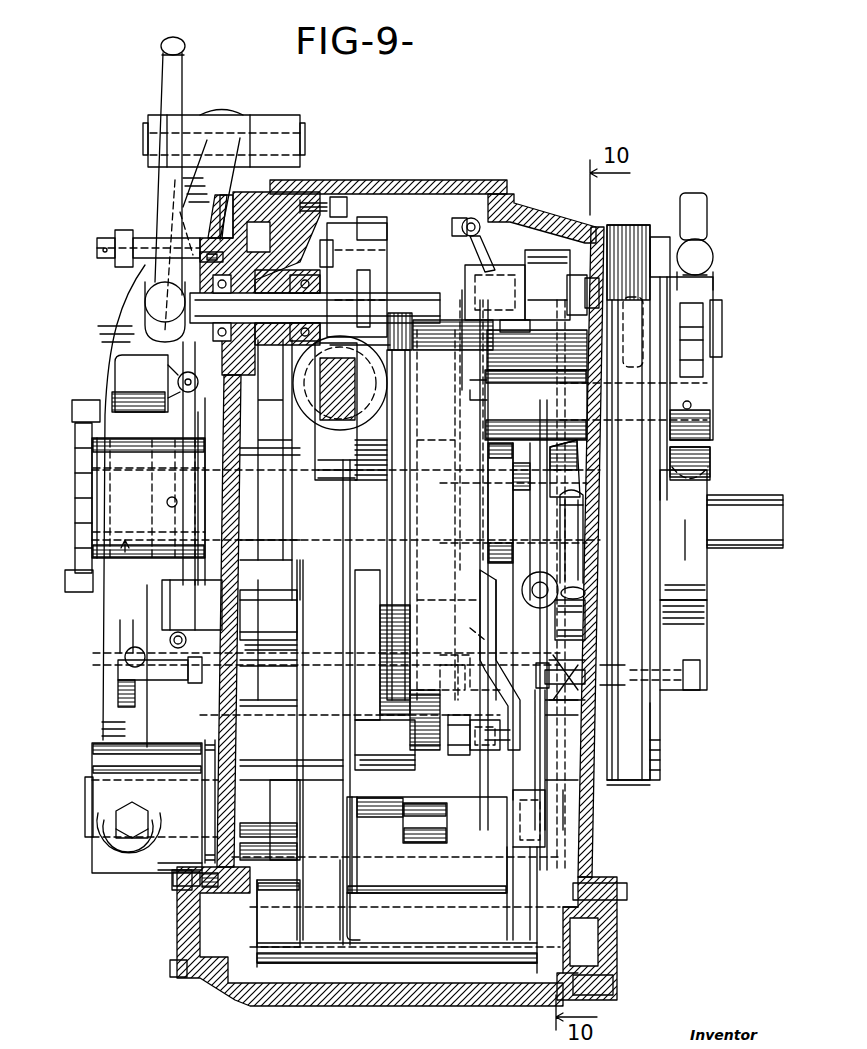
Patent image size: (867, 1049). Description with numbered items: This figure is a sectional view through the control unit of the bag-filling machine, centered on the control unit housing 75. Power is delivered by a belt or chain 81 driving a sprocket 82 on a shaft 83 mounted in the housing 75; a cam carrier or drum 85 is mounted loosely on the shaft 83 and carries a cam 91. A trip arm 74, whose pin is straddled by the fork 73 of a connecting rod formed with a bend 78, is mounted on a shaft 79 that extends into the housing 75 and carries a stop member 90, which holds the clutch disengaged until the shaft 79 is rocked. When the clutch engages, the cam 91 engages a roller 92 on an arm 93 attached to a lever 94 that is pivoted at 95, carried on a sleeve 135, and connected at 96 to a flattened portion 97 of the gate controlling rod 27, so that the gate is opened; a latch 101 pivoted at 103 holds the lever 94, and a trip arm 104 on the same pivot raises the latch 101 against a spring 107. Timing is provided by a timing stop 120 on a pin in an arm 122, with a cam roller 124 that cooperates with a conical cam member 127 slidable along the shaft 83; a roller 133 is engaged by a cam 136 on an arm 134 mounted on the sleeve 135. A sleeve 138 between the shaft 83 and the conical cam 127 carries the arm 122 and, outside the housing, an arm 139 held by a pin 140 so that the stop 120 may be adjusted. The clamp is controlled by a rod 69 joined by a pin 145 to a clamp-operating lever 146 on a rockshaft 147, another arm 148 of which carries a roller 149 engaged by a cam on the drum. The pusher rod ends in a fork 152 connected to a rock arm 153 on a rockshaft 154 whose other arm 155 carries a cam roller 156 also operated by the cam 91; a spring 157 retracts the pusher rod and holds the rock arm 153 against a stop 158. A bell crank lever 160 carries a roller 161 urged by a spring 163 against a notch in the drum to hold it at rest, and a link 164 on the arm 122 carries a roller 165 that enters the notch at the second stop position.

The gate controlling rod 27 is at (296, 376).
The rod 69 is at (125, 230).
The fork 73 is at (697, 325).
The trip arm 74 is at (703, 375).
The control unit housing 75 is at (543, 227).
The bend 78 is at (680, 203).
The shaft 79 is at (714, 404).
The belt or chain 81 is at (70, 408).
The sprocket 82 is at (70, 488).
The shaft 83 is at (740, 550).
The cam carrier or drum 85 is at (380, 697).
The stop member 90 is at (490, 400).
The cam 91 is at (418, 727).
The roller 92 is at (447, 824).
The arm 93 is at (410, 782).
The lever 94 is at (308, 673).
The pivot 95 is at (608, 934).
The connection 96 is at (300, 393).
The flattened portion 97 is at (320, 418).
The latch 101 is at (330, 240).
The pivot 103 is at (263, 303).
The trip arm 104 is at (182, 80).
The spring 107 is at (318, 222).
The timing stop 120 is at (470, 628).
The arm 122 is at (515, 705).
The cam roller 124 is at (562, 580).
The conical cam member 127 is at (555, 516).
The roller 133 is at (555, 630).
The arm 134 is at (545, 735).
The sleeve 135 is at (311, 968).
The cam 136 is at (548, 677).
The sleeve 138 is at (545, 470).
The arm 139 is at (680, 620).
The pin 140 is at (695, 670).
The pin 145 is at (103, 262).
The clamp-operating lever 146 is at (180, 430).
The rockshaft 147 is at (280, 628).
The arm 148 is at (350, 558).
The roller 149 is at (460, 555).
The fork 152 is at (300, 128).
The rock arm 153 is at (127, 317).
The rockshaft 154 is at (90, 808).
The arm 155 is at (405, 720).
The cam roller 156 is at (428, 665).
The spring 157 is at (125, 648).
The stop 158 is at (118, 373).
The bell crank lever 160 is at (510, 320).
The roller 161 is at (470, 318).
The spring 163 is at (468, 235).
The link 164 is at (495, 755).
The roller 165 is at (472, 755).